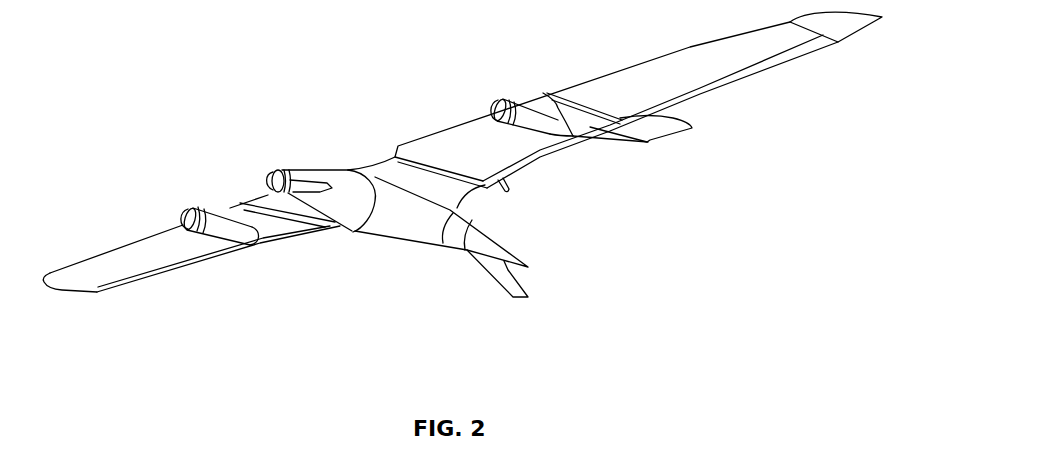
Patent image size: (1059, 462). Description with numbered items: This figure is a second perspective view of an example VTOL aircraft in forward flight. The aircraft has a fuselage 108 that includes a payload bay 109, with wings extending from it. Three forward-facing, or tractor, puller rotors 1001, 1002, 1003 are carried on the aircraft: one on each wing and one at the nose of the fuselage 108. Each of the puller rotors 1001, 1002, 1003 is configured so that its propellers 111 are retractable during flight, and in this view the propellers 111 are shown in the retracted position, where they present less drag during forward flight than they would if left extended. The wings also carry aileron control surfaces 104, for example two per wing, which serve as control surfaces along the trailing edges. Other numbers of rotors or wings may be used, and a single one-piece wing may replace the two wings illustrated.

The forward-facing rotor 1001 is at (193, 207).
The forward-facing rotor 1002 is at (382, 243).
The forward-facing rotor 1003 is at (506, 99).
The aileron control surface 104 is at (728, 83).
The fuselage 108 is at (345, 205).
The payload bay 109 is at (415, 217).
The propeller 111 is at (308, 190).